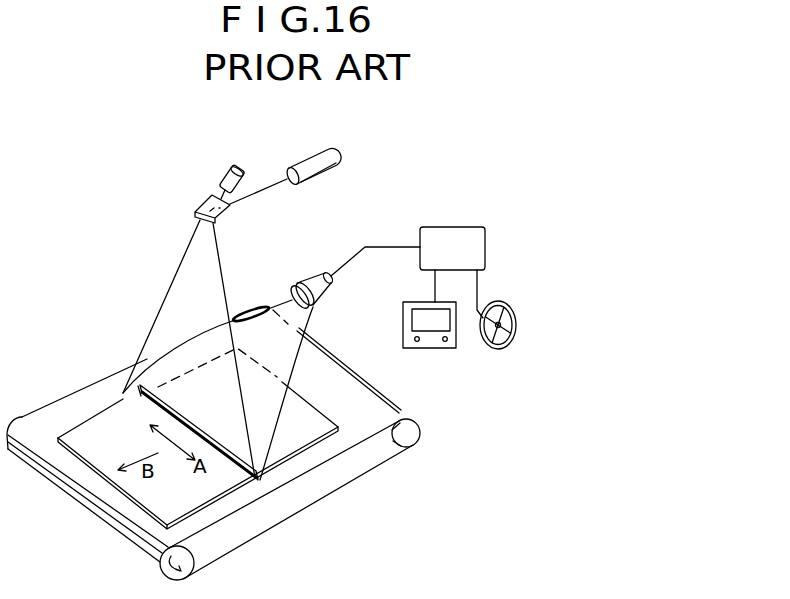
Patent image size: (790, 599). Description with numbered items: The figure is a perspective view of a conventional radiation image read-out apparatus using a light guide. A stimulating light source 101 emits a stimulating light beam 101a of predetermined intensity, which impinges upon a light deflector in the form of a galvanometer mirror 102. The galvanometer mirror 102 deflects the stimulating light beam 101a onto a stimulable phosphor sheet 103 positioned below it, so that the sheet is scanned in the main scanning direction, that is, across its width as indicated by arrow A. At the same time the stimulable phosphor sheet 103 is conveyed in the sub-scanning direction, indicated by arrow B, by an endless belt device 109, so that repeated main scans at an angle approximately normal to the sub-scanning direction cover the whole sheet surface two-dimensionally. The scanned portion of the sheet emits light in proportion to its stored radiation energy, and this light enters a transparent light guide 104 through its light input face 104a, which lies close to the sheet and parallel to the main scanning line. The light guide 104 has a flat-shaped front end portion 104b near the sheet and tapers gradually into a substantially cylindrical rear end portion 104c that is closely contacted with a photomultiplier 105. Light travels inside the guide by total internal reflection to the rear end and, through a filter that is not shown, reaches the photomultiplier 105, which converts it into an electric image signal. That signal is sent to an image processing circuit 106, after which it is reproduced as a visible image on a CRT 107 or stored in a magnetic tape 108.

The stimulating light source 101 is at (315, 151).
The stimulating light beam 101a is at (277, 184).
The galvanometer mirror 102 is at (200, 200).
The stimulable phosphor sheet 103 is at (83, 422).
The transparent light guide 104 is at (280, 353).
The light input face 104a is at (192, 432).
The flat-shaped front end portion 104b is at (140, 398).
The substantially cylindrical rear end portion 104c is at (297, 302).
The photomultiplier 105 is at (307, 280).
The image processing circuit 106 is at (460, 227).
The CRT 107 is at (432, 348).
The magnetic tape 108 is at (505, 345).
The endless belt device 109 is at (390, 414).